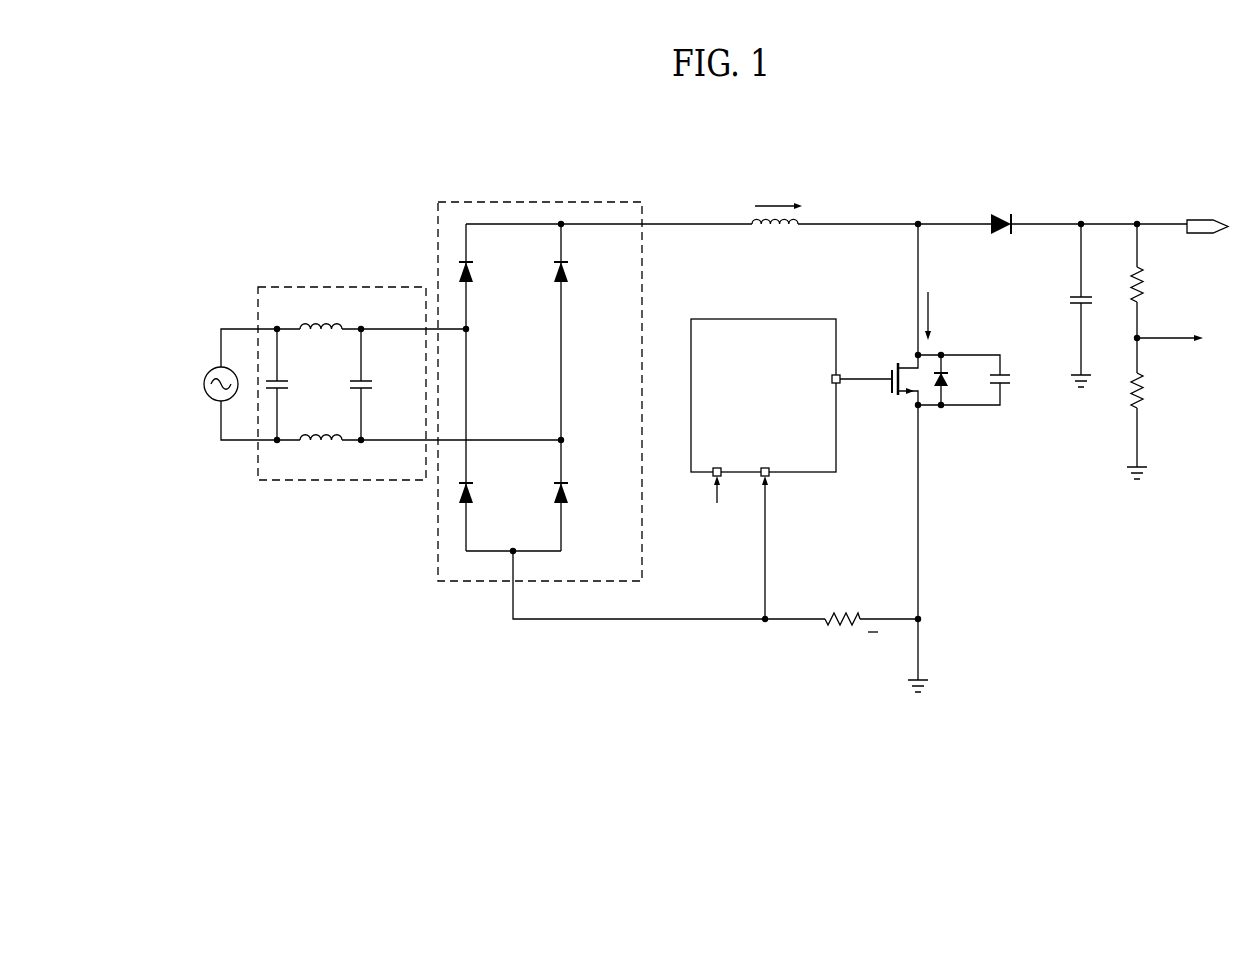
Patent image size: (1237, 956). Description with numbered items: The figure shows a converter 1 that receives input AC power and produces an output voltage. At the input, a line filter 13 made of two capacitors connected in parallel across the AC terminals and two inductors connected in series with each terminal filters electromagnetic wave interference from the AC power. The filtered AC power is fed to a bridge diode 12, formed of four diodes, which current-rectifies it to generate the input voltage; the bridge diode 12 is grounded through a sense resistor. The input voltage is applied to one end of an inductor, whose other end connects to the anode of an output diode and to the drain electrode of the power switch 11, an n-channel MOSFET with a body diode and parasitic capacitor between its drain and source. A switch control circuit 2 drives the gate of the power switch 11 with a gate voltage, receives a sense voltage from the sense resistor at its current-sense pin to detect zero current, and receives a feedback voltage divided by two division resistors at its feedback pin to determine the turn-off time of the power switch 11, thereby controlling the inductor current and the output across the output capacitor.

The converter 1 is at (1118, 166).
The switch control circuit 2 is at (691, 390).
The power switch 11 is at (903, 395).
The bridge diode 12 is at (565, 202).
The line filter 13 is at (355, 287).